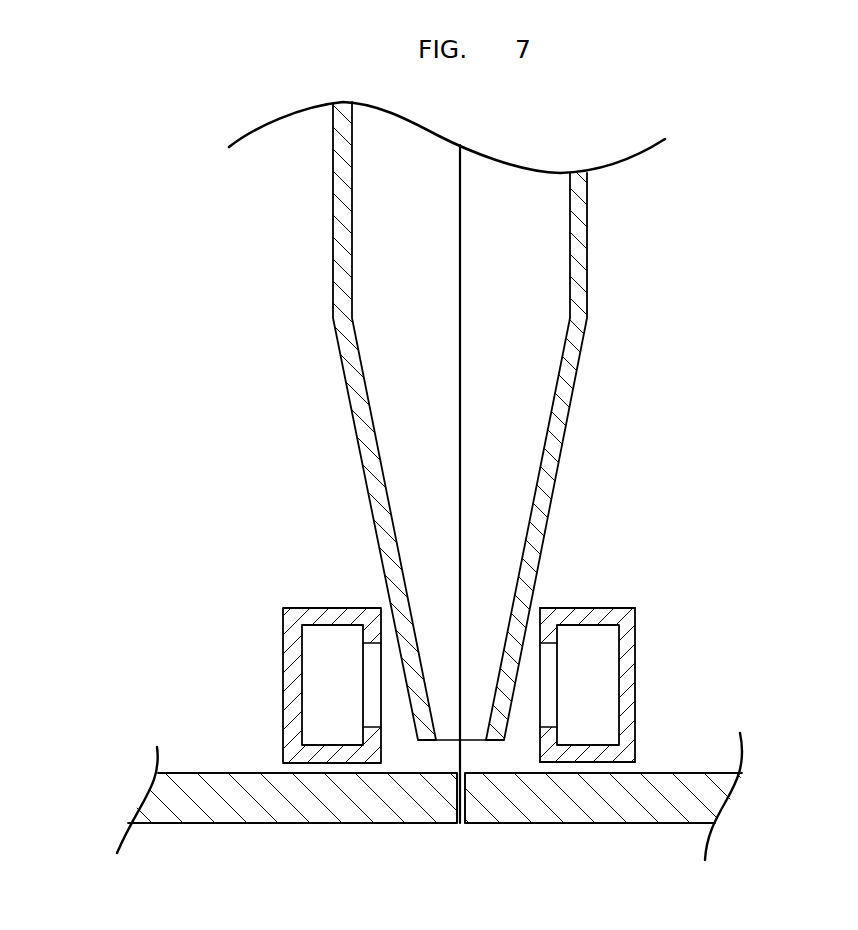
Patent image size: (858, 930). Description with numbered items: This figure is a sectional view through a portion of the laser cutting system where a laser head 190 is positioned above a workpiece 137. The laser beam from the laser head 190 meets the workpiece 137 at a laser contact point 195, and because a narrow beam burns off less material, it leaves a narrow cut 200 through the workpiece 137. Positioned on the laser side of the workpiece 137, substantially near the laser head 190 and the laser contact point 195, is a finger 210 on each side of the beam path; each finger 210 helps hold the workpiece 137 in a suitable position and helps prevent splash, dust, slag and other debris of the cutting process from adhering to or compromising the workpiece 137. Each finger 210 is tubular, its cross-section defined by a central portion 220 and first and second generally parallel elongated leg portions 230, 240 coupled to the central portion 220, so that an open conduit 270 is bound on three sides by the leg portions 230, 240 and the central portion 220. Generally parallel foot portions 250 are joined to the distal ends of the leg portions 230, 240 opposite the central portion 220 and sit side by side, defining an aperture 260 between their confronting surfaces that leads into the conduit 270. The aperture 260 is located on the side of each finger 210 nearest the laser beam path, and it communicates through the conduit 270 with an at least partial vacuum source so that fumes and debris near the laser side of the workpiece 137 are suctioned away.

The workpiece 137 is at (185, 772).
The laser head 190 is at (587, 247).
The laser contact point 195 is at (452, 757).
The cut 200 is at (465, 798).
The finger 210 is at (267, 595).
The central portion 220 is at (637, 651).
The first leg portion 230 is at (612, 608).
The second leg portion 240 is at (600, 762).
The foot portion 250 is at (540, 628).
The aperture 260 is at (367, 680).
The conduit 270 is at (330, 700).